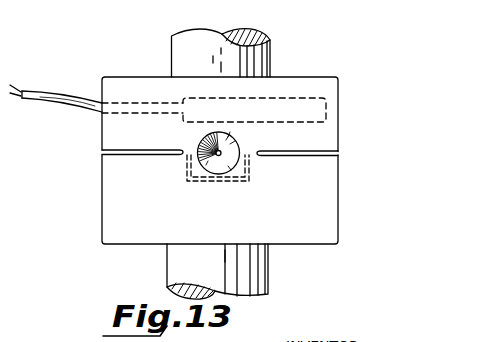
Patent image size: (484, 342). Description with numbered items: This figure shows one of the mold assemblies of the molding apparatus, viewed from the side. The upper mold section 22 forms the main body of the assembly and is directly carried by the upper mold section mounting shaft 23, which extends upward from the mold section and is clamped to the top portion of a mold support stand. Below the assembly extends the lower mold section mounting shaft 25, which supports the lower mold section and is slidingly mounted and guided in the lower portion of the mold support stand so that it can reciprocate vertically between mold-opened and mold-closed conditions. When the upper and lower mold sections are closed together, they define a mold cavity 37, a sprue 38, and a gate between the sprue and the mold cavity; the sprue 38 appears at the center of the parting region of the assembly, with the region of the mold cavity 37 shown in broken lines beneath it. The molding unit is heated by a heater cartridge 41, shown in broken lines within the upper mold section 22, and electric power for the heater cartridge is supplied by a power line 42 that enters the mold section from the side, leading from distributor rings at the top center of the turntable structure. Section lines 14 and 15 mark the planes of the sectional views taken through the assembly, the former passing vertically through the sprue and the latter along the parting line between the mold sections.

The section line 14- 14 is at (234, 130).
The section line 15- 15 is at (100, 152).
The upper mold section 22 is at (302, 81).
The upper mold section mounting shaft 23 is at (171, 45).
The lower mold section mounting shaft 25 is at (170, 274).
The mold cavity 37 is at (187, 172).
The sprue 38 is at (232, 163).
The heater cartridge 41 is at (318, 90).
The power line 42 is at (44, 95).